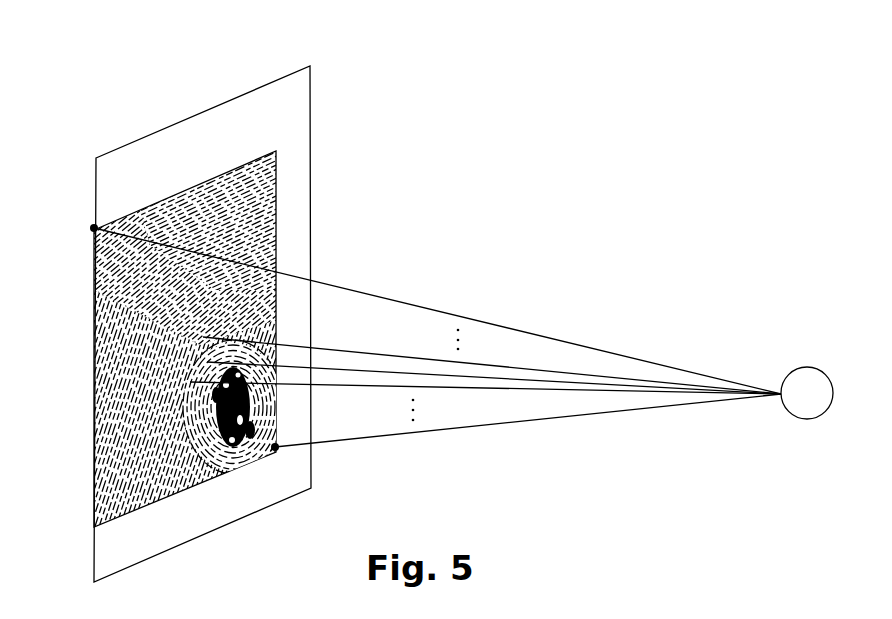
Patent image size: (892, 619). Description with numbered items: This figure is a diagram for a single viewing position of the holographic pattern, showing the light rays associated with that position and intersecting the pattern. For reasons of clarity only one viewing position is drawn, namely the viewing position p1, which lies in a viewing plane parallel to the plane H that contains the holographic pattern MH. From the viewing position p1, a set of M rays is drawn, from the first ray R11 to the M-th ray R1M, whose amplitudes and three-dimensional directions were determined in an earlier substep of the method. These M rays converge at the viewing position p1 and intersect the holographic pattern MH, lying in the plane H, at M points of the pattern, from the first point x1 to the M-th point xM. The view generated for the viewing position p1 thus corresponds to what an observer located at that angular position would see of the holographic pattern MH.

The plane H is at (189, 92).
The holographic pattern MH is at (287, 182).
The first point of the pattern x1 is at (94, 228).
The M-th point of the pattern xM is at (276, 448).
The first ray R11 is at (439, 300).
The M-th ray R1M is at (449, 443).
The viewing position p1 is at (807, 393).